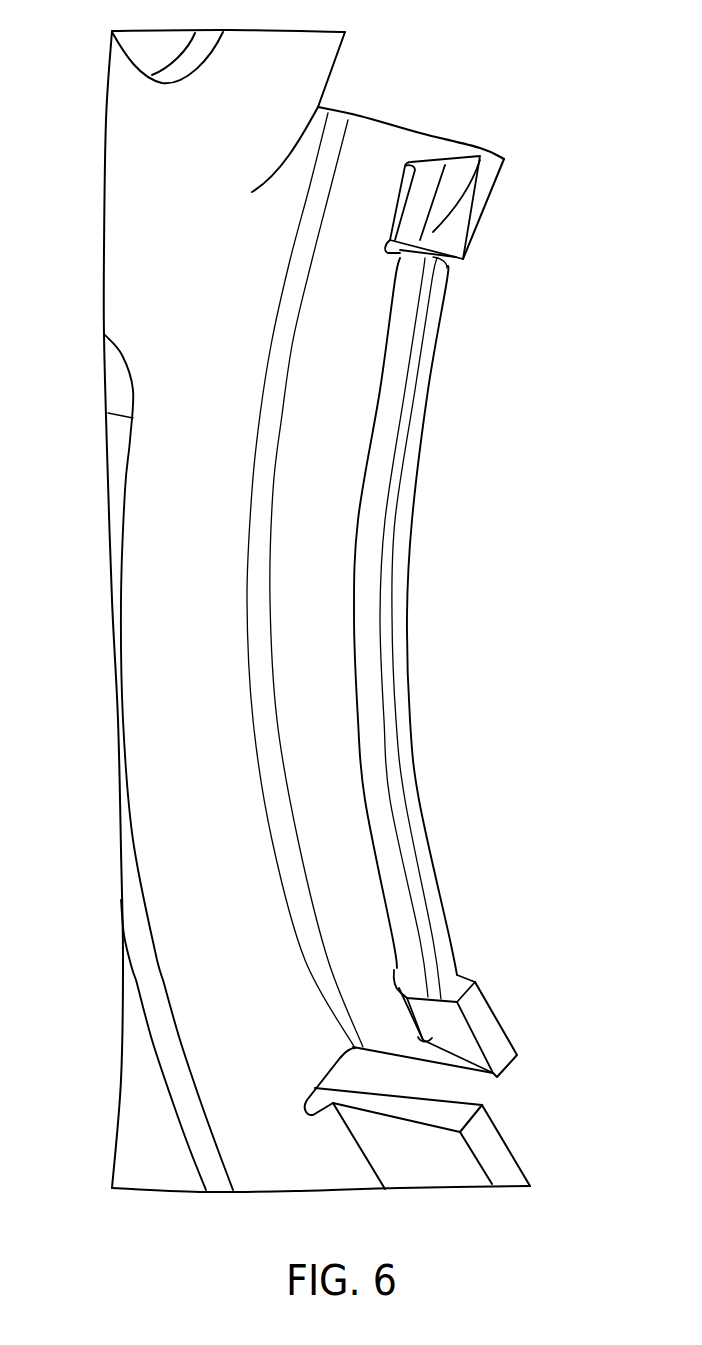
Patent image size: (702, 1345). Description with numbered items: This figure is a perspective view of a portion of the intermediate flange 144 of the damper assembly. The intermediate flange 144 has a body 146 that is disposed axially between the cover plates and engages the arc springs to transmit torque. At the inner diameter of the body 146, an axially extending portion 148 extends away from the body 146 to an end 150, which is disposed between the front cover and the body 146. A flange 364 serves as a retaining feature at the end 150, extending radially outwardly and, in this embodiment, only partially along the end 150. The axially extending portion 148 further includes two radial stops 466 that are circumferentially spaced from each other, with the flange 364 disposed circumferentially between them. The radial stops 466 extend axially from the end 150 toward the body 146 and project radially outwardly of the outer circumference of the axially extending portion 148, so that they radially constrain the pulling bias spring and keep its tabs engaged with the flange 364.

The intermediate flange 144 is at (106, 278).
The body 146 is at (318, 107).
The axially extending portion 148 is at (360, 190).
The flange 364 is at (392, 498).
The radial stops 466 is at (450, 220).
The end 150 is at (493, 1025).